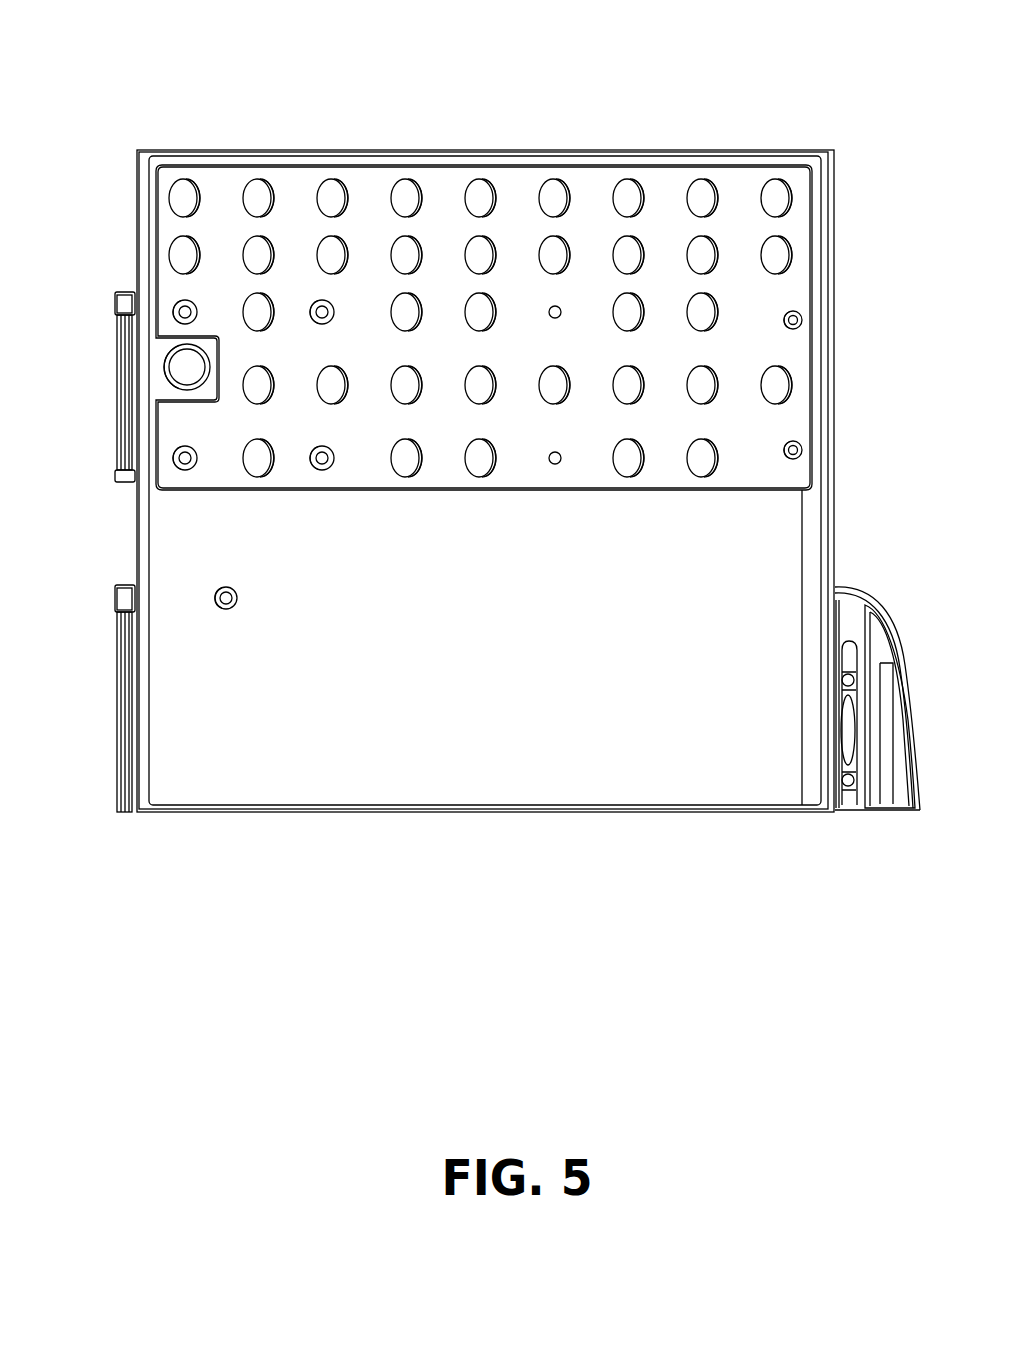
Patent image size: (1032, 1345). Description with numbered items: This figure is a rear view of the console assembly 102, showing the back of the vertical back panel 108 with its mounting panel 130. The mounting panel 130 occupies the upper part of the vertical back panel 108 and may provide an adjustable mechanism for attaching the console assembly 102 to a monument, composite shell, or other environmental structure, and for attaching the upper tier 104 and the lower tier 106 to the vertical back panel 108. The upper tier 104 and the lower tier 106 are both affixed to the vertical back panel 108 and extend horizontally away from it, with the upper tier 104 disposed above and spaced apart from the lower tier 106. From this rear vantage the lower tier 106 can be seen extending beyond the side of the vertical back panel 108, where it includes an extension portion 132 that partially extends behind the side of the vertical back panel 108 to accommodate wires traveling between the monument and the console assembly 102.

The console assembly 102 is at (490, 96).
The upper tier 104 is at (100, 285).
The lower tier 106 is at (100, 583).
The vertical back panel 108 is at (462, 629).
The mounting panel 130 is at (848, 152).
The extension portion 132 is at (825, 818).